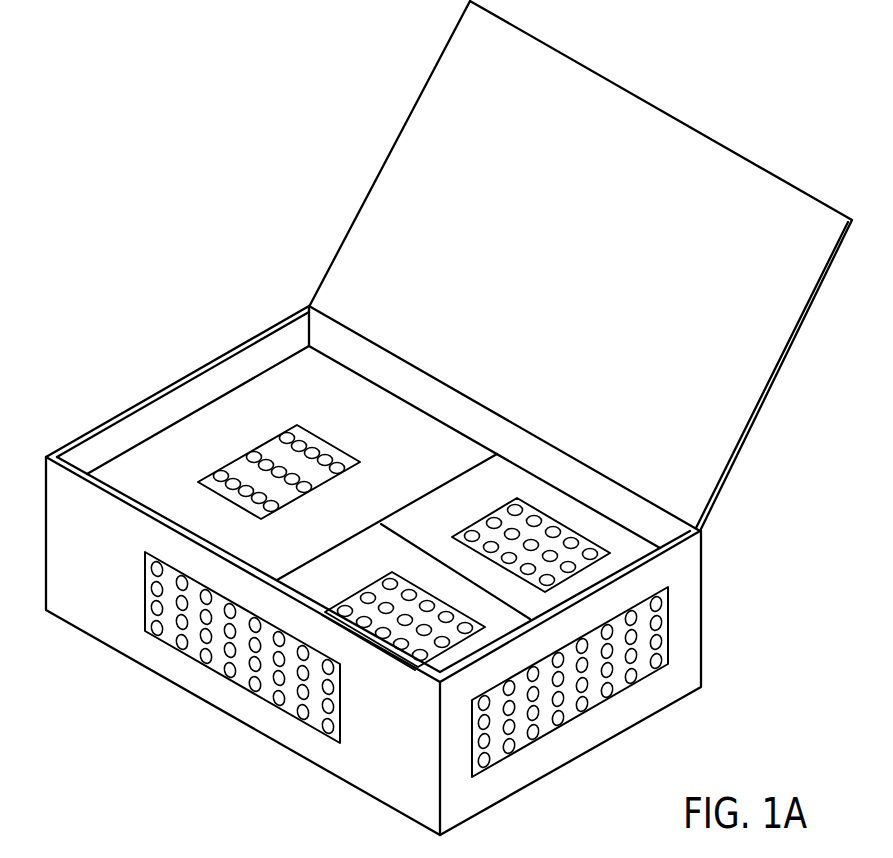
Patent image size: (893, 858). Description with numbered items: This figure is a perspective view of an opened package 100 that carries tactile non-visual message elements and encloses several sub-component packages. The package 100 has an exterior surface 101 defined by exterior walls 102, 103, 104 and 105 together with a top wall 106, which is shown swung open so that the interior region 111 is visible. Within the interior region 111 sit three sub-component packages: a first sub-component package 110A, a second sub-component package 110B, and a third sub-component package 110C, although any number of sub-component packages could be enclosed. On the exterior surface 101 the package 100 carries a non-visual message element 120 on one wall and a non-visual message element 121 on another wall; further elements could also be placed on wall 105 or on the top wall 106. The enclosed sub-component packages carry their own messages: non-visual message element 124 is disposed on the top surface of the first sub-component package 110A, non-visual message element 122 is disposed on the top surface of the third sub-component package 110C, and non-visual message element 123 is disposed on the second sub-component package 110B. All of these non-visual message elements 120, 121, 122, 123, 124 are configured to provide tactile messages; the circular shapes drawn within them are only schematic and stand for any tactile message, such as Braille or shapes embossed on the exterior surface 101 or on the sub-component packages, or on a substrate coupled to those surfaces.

The package 100 is at (128, 131).
The exterior surface 101 is at (88, 426).
The exterior wall 102 is at (108, 630).
The exterior wall 103 is at (540, 768).
The exterior wall 104 is at (432, 396).
The exterior wall 105 is at (255, 336).
The top wall 106 is at (373, 182).
The first sub-component package 110A is at (182, 411).
The second sub-component package 110B is at (528, 462).
The third sub-component package 110C is at (391, 556).
The interior region 111 is at (222, 377).
The non-visual message element 120 is at (257, 693).
The non-visual message element 121 is at (627, 693).
The non-visual message element 122 is at (373, 582).
The non-visual message element 123 is at (573, 530).
The non-visual message element 124 is at (313, 428).